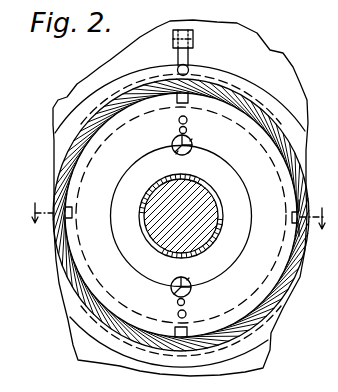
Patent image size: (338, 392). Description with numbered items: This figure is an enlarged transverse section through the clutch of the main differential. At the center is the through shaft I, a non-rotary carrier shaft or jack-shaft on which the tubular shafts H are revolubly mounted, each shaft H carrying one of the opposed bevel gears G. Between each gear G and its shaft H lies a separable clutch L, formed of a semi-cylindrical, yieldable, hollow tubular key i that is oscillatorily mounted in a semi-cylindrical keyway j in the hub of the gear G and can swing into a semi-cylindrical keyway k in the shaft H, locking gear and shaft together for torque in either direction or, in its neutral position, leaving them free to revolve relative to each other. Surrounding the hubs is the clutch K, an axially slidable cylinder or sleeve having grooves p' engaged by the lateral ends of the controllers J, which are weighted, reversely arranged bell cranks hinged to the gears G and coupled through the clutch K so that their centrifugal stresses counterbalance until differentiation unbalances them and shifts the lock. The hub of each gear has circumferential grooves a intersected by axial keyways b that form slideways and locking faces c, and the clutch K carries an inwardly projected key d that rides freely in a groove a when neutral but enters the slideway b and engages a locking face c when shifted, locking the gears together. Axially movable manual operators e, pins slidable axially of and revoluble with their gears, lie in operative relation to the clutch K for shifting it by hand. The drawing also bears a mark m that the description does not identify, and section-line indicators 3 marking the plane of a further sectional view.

The controllers J is at (193, 40).
The clutch K is at (213, 83).
The grooves p' is at (180, 216).
The circumferential grooves a is at (181, 215).
The opposed bevel gears G is at (135, 181).
The separate shafts H is at (138, 162).
The through shaft I is at (216, 197).
The axial keyways b is at (292, 218).
The key d is at (176, 327).
The locking faces c is at (295, 211).
The separable clutch L is at (172, 141).
The manual operators e is at (180, 118).
The hollow tubular key i is at (178, 130).
The keyway j is at (192, 139).
The arm m is at (178, 151).
The keyway k is at (190, 151).
The section line 3- 3 is at (178, 214).